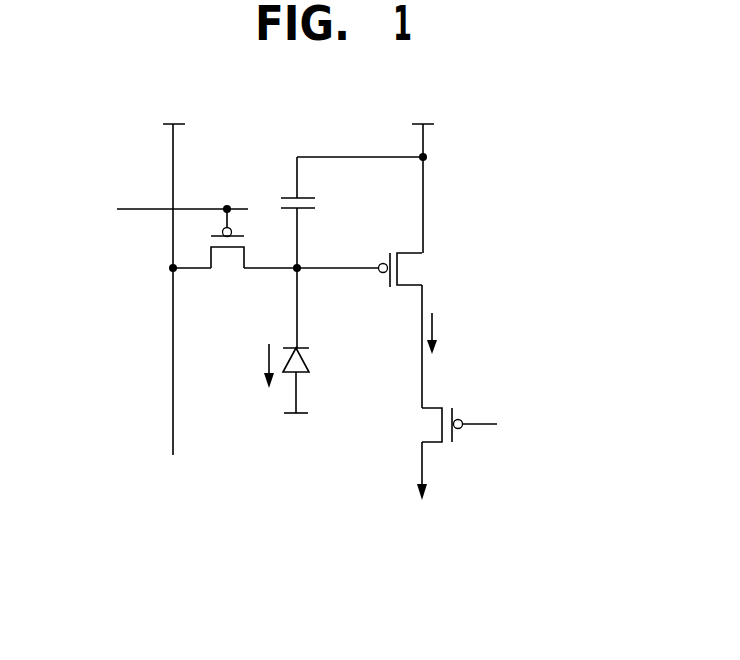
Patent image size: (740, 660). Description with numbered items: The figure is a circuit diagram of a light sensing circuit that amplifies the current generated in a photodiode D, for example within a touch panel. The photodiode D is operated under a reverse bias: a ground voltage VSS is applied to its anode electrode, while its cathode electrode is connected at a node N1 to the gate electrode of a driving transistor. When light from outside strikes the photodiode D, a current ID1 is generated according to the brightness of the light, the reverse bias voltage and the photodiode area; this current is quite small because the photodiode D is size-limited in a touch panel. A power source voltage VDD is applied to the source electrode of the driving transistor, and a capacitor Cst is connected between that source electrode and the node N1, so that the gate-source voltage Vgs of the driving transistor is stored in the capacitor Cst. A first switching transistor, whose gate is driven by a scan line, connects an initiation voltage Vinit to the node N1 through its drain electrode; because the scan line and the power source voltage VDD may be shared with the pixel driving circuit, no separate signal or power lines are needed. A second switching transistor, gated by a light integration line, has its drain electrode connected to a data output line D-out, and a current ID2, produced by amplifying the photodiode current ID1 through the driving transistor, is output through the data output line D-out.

The initiation voltage Vinit is at (176, 276).
The power source voltage VDD is at (371, 172).
The capacitor Cst is at (318, 230).
The node N1 is at (335, 254).
The current ID2 is at (447, 333).
The data output line D-out is at (420, 507).
The photodiode D is at (308, 340).
The current ID1 is at (256, 366).
The ground voltage VSS is at (295, 430).